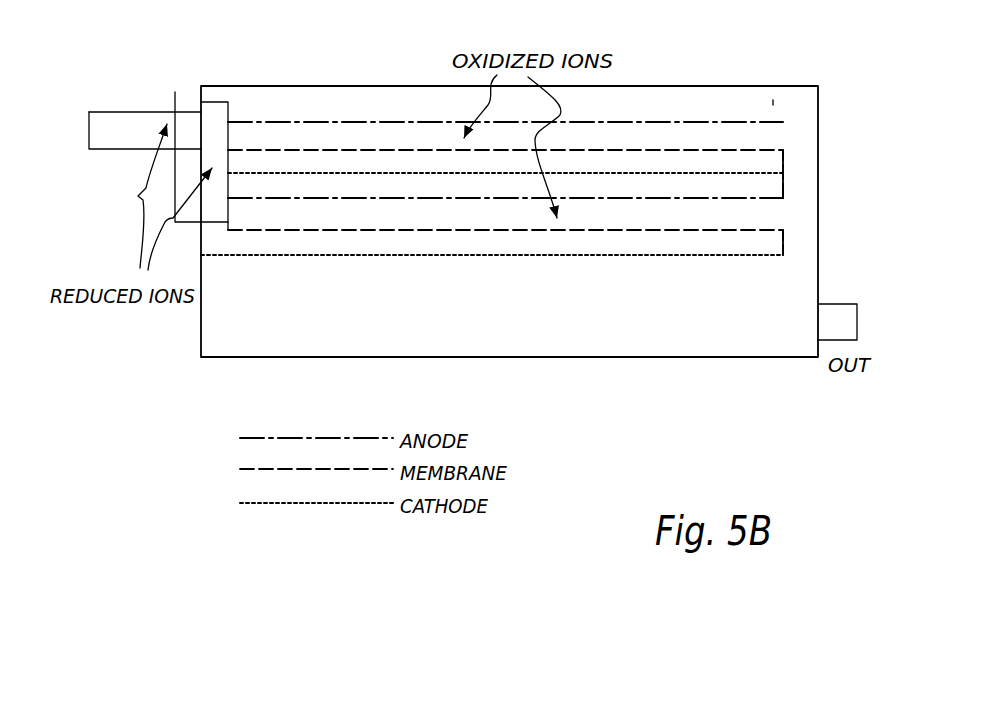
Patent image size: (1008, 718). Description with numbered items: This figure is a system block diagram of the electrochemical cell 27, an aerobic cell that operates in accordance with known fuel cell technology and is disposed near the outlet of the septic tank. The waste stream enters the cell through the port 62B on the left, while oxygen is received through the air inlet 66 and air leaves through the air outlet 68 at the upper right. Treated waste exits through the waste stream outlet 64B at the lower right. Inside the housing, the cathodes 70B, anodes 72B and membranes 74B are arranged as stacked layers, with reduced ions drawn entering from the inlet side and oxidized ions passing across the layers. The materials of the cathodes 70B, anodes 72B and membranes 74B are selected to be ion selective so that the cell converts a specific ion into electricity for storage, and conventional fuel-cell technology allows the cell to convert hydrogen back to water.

The electrochemical cell 27 is at (311, 77).
The air inlet 66 is at (126, 82).
The port 62B is at (130, 150).
The air outlet 68 is at (773, 105).
The waste stream outlet 64B is at (830, 304).
The cathode 70B is at (635, 150).
The anode 72B is at (635, 122).
The membrane 74B is at (275, 150).